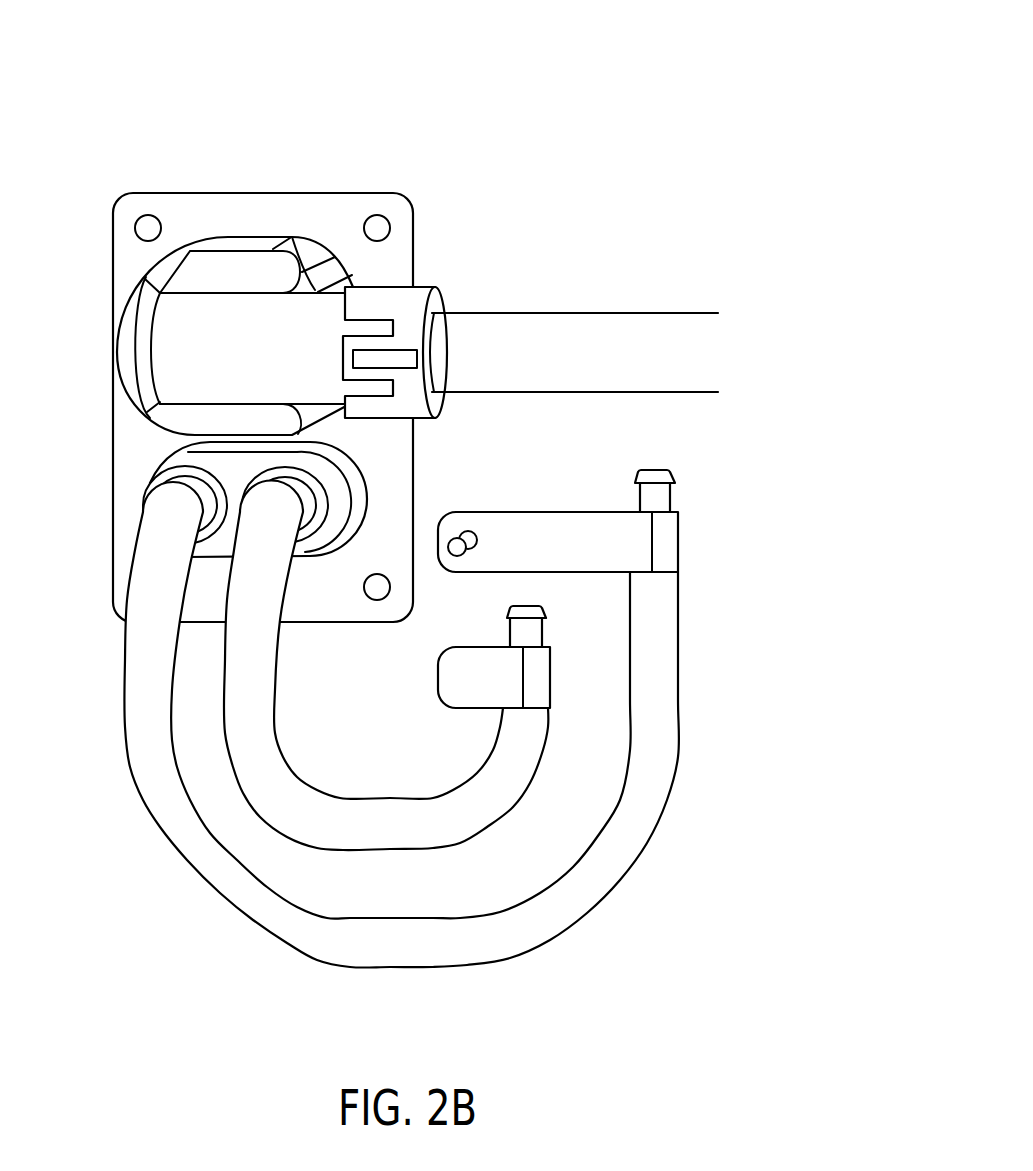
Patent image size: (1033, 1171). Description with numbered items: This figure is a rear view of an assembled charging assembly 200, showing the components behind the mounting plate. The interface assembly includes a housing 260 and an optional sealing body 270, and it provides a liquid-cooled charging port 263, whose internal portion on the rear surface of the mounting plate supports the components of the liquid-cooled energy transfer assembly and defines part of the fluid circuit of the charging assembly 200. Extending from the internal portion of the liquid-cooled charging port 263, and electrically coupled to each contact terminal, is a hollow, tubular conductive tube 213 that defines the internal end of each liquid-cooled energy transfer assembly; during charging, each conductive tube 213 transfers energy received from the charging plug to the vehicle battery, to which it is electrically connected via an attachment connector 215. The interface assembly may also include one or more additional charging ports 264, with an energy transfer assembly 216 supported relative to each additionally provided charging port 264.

The charging assembly 200 is at (136, 57).
The housing 260 is at (296, 166).
The liquid-cooled charging port 263 is at (105, 543).
The charging port 264 is at (105, 342).
The energy transfer assembly 216 is at (560, 320).
The sealing body 270 is at (163, 468).
The conductive tube 213 is at (140, 750).
The attachment connector 215 is at (658, 470).